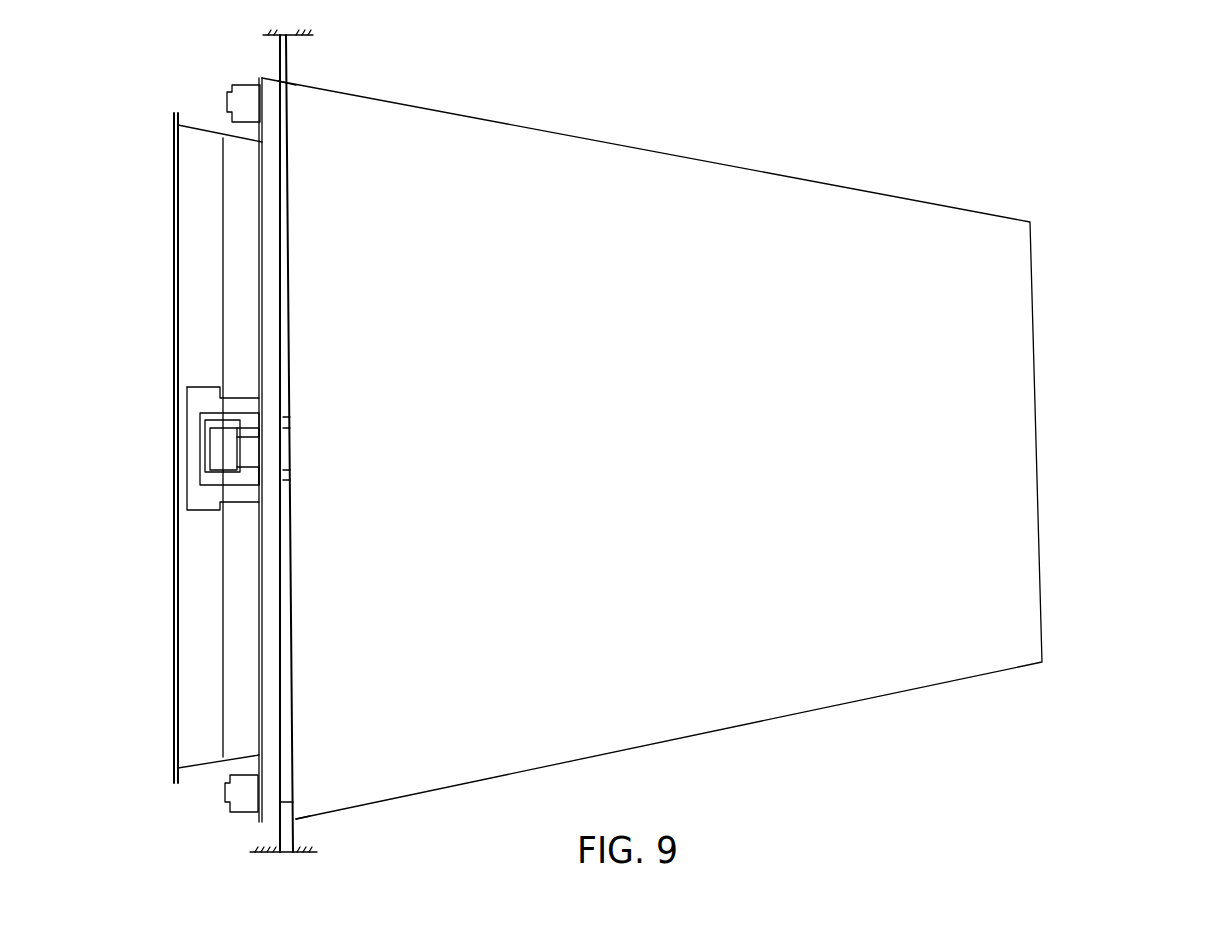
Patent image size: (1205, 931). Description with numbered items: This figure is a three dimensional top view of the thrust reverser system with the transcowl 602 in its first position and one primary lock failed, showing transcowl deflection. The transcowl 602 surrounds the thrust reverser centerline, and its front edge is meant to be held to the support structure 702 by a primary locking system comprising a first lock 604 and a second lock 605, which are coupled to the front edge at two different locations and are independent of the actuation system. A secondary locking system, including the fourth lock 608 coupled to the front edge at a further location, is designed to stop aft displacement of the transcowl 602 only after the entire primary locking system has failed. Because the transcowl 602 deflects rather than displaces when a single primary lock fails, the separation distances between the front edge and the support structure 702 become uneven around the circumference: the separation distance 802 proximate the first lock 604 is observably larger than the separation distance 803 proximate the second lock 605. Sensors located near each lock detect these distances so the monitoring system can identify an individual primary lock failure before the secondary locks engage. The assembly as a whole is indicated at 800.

The transcowl 602 is at (958, 204).
The first lock 604 is at (226, 792).
The second lock 605 is at (227, 100).
The fourth lock 608 is at (174, 446).
The support structure 702 is at (279, 818).
The display assembly 800 is at (1063, 168).
The separation distance 802 is at (311, 856).
The separation distance 803 is at (263, 35).